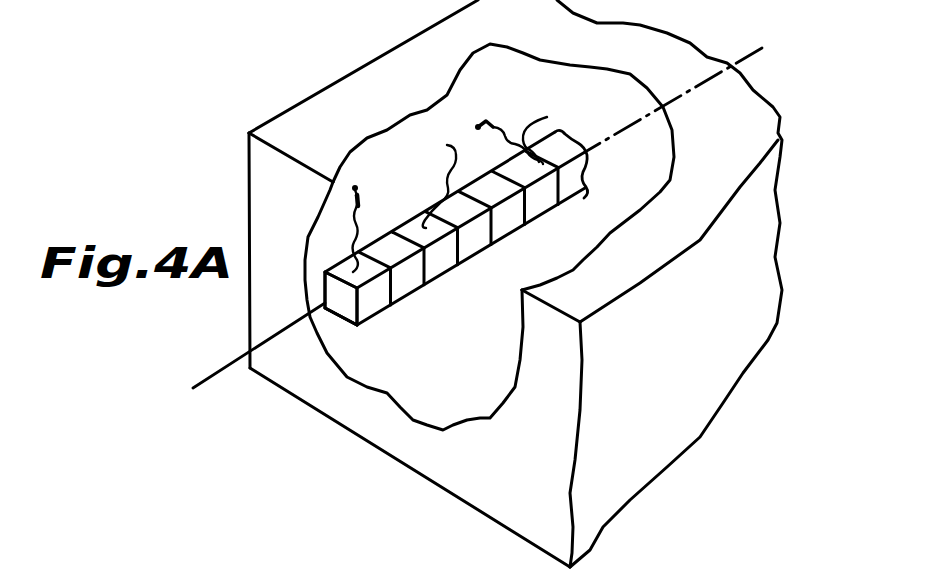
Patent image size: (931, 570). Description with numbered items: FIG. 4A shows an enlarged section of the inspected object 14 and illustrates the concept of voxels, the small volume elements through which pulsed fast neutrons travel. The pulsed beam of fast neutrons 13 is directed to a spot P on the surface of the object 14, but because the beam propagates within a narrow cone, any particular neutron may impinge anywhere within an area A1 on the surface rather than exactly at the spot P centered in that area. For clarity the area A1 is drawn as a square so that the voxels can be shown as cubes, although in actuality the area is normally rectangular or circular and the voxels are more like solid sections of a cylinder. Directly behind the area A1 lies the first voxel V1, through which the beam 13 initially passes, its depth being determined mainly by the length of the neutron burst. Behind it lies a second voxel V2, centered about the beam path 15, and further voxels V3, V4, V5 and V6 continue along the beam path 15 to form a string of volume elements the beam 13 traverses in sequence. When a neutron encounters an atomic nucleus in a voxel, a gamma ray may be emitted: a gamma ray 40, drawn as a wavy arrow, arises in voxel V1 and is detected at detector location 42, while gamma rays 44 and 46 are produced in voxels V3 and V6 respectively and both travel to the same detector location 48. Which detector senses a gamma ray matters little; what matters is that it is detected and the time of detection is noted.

The pulsed beam of fast neutrons 13 is at (240, 338).
The object 14 is at (297, 117).
The beam path 15 is at (762, 48).
The gamma ray 40 is at (376, 211).
The detector location 42 is at (356, 188).
The gamma ray 44 is at (438, 182).
The gamma ray 46 is at (549, 133).
The detector location 48 is at (478, 127).
The spot P is at (338, 302).
The area A1 is at (346, 313).
The voxel V1 is at (377, 301).
The voxel V2 is at (408, 285).
The voxel V3 is at (438, 262).
The voxel V4 is at (476, 243).
The voxel V5 is at (512, 221).
The voxel V6 is at (545, 203).